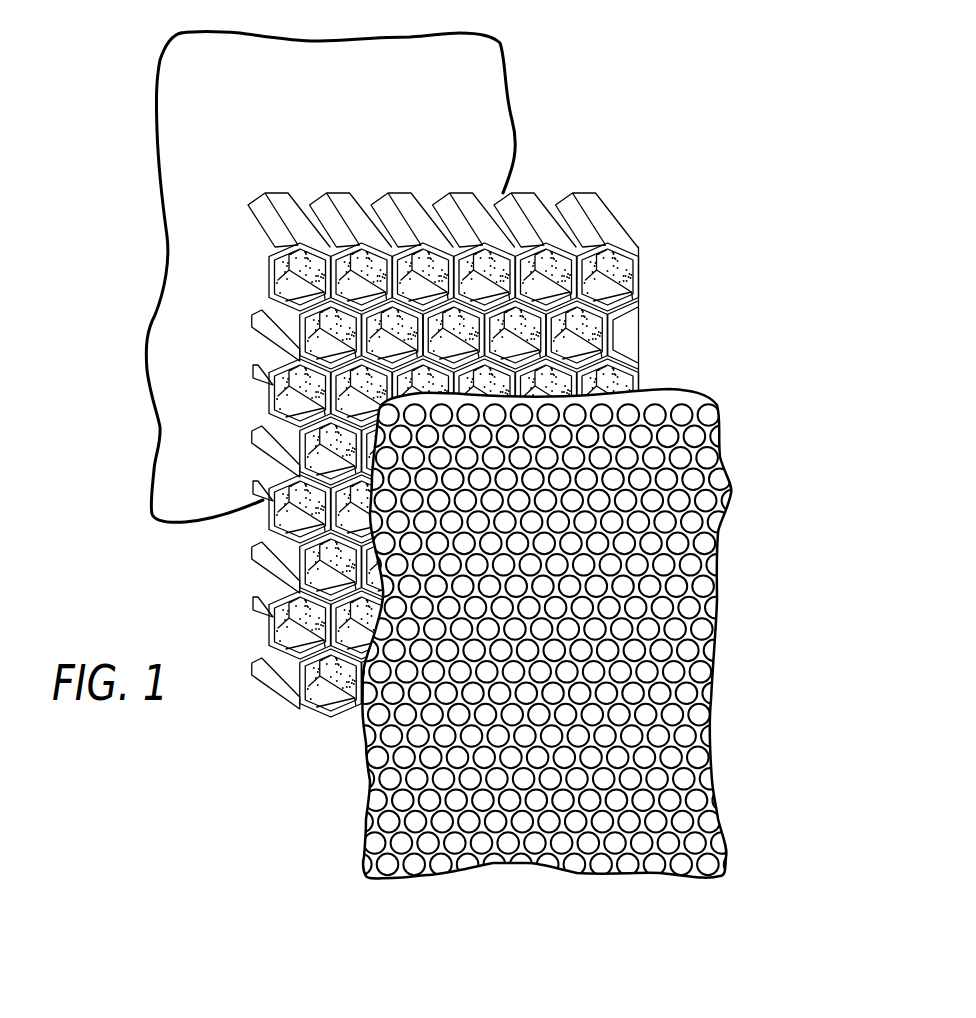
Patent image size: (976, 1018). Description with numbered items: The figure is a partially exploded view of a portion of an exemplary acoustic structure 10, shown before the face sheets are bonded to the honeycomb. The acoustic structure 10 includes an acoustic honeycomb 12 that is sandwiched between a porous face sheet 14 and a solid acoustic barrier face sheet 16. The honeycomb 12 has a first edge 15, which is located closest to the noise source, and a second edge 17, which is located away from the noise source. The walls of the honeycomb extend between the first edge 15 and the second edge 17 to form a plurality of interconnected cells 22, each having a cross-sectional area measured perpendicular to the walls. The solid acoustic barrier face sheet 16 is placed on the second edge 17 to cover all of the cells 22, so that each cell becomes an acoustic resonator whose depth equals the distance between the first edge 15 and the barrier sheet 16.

The acoustic structure 10 is at (655, 168).
The acoustic honeycomb 12 is at (613, 230).
The porous face sheet 14 is at (717, 406).
The first edge 15 is at (297, 363).
The solid acoustic barrier face sheet 16 is at (500, 43).
The second edge 17 is at (279, 200).
The cells 22 is at (592, 327).